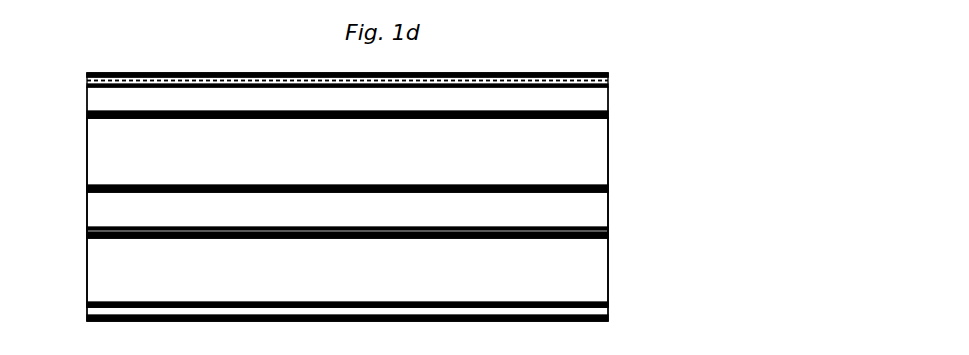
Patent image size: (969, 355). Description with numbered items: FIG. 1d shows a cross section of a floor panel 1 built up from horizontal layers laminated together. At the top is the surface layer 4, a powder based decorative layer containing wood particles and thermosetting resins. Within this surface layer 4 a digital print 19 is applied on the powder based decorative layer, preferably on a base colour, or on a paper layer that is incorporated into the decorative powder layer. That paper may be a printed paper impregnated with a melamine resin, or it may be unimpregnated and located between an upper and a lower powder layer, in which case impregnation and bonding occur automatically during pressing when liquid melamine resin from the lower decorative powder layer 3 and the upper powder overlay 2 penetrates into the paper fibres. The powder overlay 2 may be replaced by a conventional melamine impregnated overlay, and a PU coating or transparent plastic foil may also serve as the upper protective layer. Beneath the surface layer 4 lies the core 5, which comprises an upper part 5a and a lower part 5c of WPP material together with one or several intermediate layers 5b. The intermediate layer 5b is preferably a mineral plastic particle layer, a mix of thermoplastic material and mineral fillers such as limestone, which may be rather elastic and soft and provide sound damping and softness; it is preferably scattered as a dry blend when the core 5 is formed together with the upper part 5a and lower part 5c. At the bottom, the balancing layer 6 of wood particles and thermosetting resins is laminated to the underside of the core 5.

The floor panel 1 is at (131, 73).
The powder overlay 2 is at (608, 75).
The digital print 19 is at (608, 83).
The surface layer 4 is at (87, 75).
The lower decorative powder layer 3 is at (603, 103).
The core 5 is at (87, 178).
The upper part of core 5a is at (608, 158).
The intermediate layer 5b is at (608, 213).
The lower part of core 5c is at (603, 268).
The balancing layer 6 is at (87, 318).